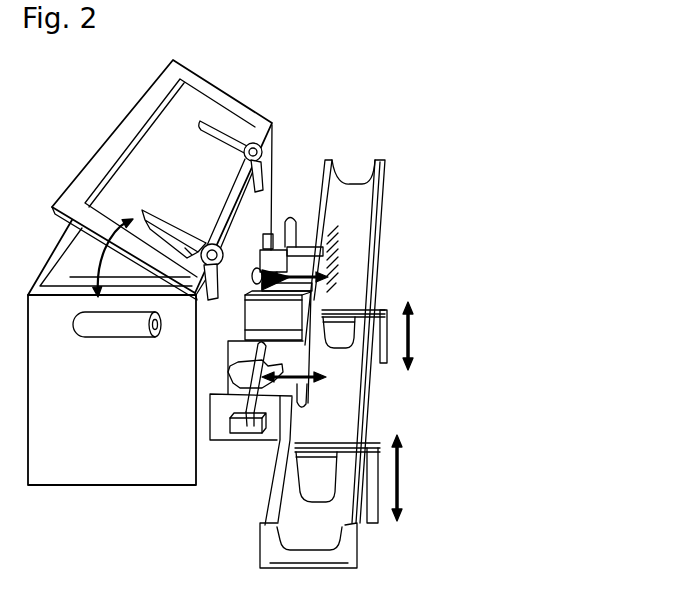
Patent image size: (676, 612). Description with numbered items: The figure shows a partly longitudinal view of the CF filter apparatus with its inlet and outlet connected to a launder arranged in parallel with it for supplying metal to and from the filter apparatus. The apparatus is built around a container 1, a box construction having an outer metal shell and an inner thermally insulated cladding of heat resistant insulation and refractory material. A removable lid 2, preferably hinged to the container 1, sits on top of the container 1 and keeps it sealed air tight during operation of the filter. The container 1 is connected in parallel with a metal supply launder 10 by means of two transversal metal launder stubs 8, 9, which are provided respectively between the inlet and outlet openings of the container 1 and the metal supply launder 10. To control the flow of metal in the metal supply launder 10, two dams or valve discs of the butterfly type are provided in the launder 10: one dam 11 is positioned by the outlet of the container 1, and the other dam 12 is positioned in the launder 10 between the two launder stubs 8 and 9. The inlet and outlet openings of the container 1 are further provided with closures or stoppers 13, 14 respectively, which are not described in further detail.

The container 1 is at (102, 512).
The removable lid 2 is at (190, 99).
The launder stub 8 is at (218, 432).
The launder stub 9 is at (272, 245).
The metal supply launder 10 is at (354, 196).
The dam 11 is at (324, 478).
The dam 12 is at (347, 329).
The stopper 13 is at (292, 387).
The stopper 14 is at (312, 266).